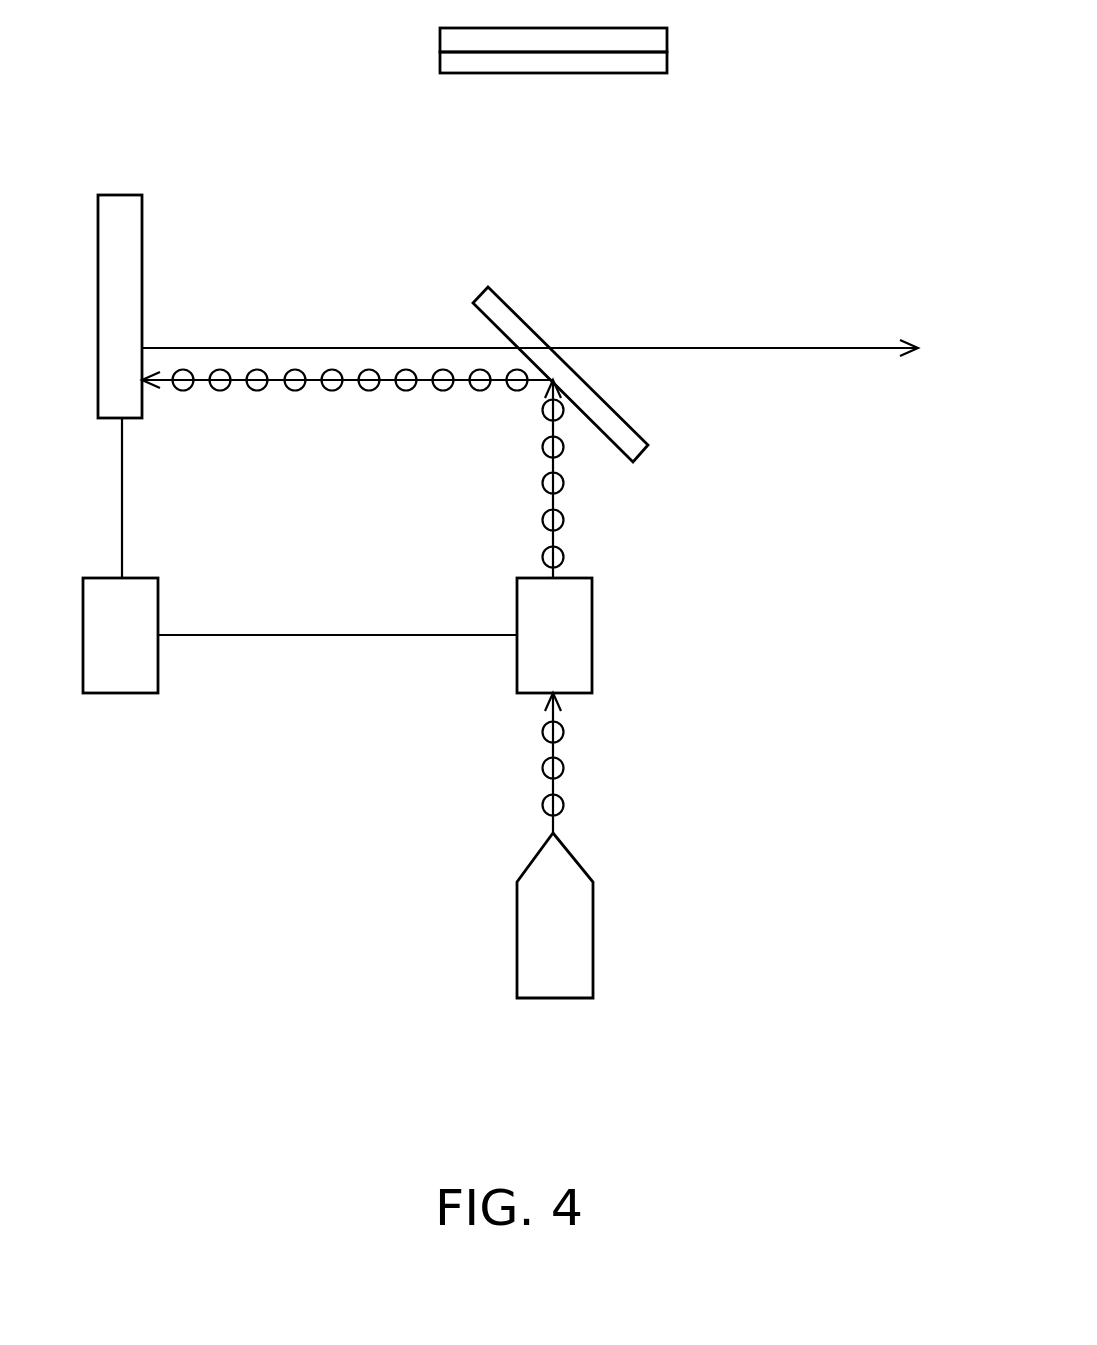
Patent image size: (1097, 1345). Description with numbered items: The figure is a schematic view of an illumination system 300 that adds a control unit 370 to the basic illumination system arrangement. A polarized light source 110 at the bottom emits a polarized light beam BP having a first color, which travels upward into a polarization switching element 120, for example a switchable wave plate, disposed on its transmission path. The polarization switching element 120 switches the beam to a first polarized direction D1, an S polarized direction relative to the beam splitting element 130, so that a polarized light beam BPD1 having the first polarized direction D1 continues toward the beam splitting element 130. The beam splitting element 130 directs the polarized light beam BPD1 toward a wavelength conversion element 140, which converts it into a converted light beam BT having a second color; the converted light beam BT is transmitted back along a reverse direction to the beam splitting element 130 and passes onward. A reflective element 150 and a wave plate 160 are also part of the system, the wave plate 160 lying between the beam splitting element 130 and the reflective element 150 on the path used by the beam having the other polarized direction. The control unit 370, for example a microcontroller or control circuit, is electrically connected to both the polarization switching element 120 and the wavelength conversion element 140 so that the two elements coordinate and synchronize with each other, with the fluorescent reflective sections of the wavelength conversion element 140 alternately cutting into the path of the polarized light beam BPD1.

The illumination system 300 is at (907, 1092).
The polarized light source 110 is at (593, 938).
The polarization switching element 120 is at (592, 633).
The beam splitting element 130 is at (636, 448).
The wavelength conversion element 140 is at (122, 193).
The reflective element 150 is at (667, 42).
The wave plate 160 is at (667, 58).
The control unit 370 is at (123, 693).
The converted light beam BT is at (277, 346).
The polarized light beam having the first polarized direction BPD1 is at (200, 386).
The polarized light beam BP is at (543, 795).
The first polarized direction D1 is at (296, 392).